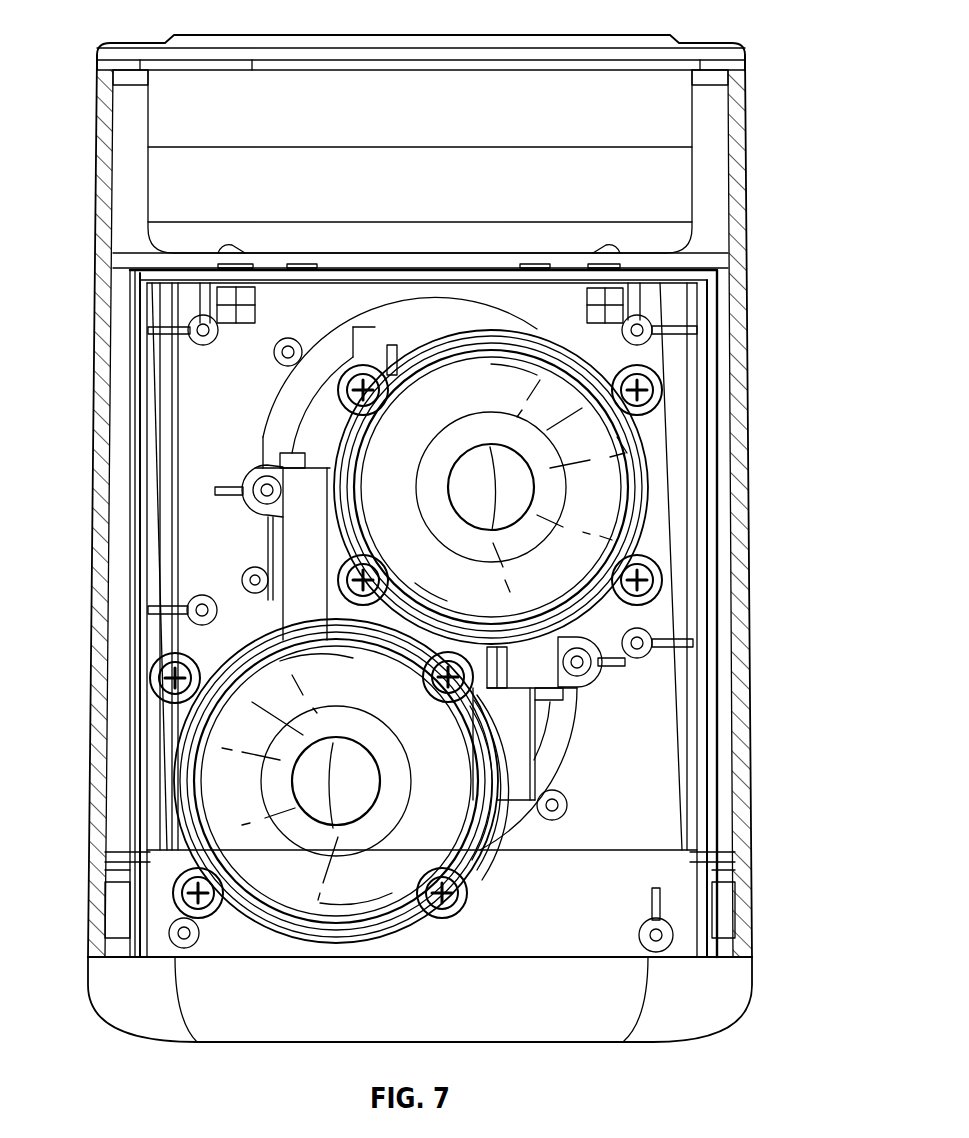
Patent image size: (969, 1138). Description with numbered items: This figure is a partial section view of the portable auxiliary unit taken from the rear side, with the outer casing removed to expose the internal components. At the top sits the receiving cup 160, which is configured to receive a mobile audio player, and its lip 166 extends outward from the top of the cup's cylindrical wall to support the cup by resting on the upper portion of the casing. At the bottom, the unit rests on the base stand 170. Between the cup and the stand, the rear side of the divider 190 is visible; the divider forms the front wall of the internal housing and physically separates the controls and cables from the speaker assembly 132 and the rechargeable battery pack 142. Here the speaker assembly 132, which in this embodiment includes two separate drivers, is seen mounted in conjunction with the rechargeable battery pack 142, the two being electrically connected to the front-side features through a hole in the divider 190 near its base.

The lip 166 is at (737, 44).
The receiving cup 160 is at (485, 127).
The rechargeable battery pack 142 is at (323, 413).
The speaker assembly 132 is at (182, 757).
The divider 190 is at (642, 818).
The base stand 170 is at (728, 1017).